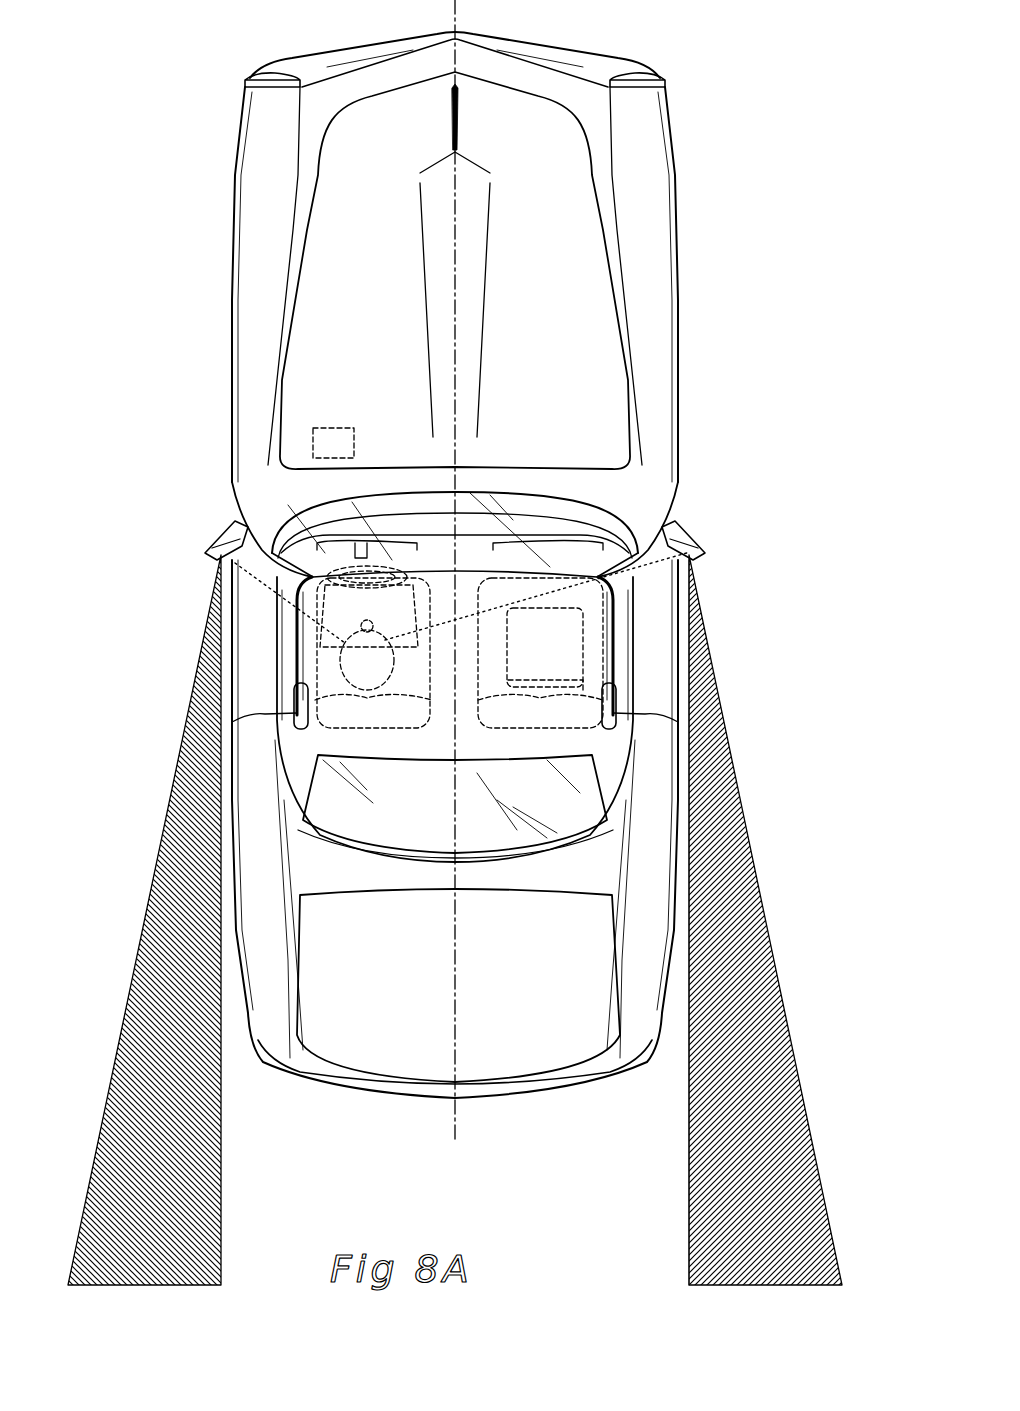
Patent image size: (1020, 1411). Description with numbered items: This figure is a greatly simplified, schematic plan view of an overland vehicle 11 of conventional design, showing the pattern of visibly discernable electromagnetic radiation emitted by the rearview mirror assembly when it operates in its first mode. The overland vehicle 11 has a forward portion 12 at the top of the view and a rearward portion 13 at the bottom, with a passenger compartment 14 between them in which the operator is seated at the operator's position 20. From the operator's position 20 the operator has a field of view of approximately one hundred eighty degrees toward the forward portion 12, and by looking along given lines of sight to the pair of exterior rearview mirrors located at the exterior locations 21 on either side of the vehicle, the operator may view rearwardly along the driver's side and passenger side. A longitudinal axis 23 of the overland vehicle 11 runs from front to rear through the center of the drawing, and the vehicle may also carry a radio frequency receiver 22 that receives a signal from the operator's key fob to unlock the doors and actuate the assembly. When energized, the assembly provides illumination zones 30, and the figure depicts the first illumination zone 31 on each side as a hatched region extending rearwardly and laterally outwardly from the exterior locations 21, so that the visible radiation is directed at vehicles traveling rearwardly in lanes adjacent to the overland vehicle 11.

The overland vehicle 11 is at (455, 565).
The forward portion 12 is at (483, 107).
The rearward portion 13 is at (508, 1045).
The passenger compartment 14 is at (358, 713).
The operator's position 20 is at (288, 616).
The exterior locations for rearview mirrors 21 is at (238, 525).
The radio frequency receiver 22 is at (333, 427).
The longitudinal axis 23 is at (455, 4).
The illumination zones 30 is at (740, 702).
The first illumination zone 31 is at (150, 1096).